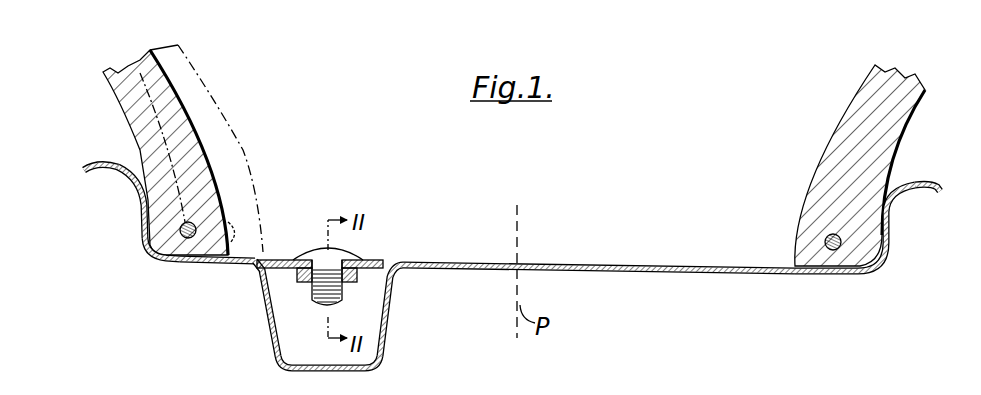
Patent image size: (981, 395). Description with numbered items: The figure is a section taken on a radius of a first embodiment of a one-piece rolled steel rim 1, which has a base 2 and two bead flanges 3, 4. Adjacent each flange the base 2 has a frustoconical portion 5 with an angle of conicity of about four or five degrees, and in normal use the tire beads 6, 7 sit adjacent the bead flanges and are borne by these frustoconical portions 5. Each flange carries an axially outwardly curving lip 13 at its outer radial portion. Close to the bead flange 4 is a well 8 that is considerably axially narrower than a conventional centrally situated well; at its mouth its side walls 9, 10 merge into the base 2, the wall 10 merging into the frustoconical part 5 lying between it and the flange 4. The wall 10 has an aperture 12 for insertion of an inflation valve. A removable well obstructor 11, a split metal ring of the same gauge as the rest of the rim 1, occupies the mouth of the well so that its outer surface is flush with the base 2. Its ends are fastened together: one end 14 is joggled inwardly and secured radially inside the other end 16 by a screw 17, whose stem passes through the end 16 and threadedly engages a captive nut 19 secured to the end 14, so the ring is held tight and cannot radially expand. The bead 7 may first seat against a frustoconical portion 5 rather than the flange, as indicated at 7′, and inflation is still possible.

The rim 1 is at (599, 276).
The base 2 is at (600, 273).
The bead flange 3 is at (883, 225).
The bead flange 4 is at (140, 203).
The frustoconical portion 5 is at (177, 263).
The tire bead 6 is at (810, 220).
The tire bead 7 is at (207, 192).
The bead seating position 7′ is at (230, 133).
The well 8 is at (321, 314).
The side wall 9 is at (360, 310).
The side wall 10 is at (262, 278).
The well obstructor 11 is at (360, 232).
The aperture 12 is at (272, 313).
The lip 13 is at (92, 164).
The end of obstructor 14 is at (387, 285).
The end of obstructor 16 is at (373, 262).
The screw 17 is at (307, 253).
The captive nut 19 is at (299, 283).